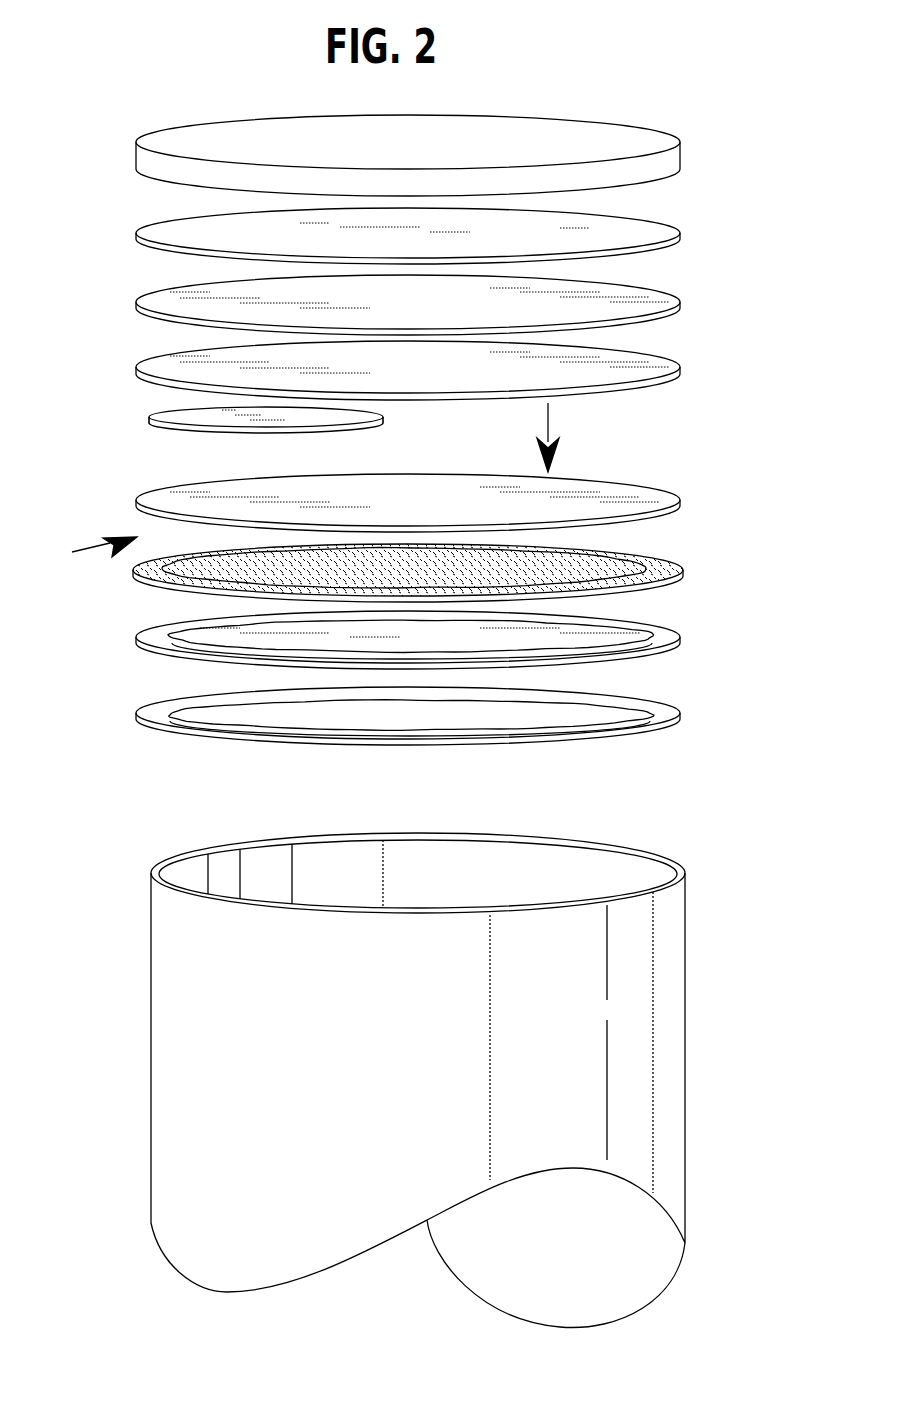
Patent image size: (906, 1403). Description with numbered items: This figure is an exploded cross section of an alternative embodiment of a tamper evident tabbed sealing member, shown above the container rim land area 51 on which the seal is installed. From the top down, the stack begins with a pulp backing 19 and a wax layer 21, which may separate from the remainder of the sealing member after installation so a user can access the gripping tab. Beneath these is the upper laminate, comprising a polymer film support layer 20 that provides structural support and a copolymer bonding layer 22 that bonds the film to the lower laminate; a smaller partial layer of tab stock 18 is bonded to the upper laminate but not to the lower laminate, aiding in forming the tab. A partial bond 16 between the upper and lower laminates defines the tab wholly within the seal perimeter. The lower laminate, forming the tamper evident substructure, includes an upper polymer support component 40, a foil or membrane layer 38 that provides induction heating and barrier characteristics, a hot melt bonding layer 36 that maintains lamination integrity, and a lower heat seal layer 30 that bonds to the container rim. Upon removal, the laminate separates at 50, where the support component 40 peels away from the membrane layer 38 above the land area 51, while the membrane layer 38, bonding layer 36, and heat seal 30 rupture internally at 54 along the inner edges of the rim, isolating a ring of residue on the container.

The pulp backing 19 is at (673, 166).
The wax layer 21 is at (633, 235).
The polymer film support layer 20 is at (610, 315).
The bonding layer 22 is at (597, 382).
The tab stock 18 is at (177, 422).
The partial bond 16 is at (569, 437).
The upper polymer support component 40 is at (620, 495).
The laminate separation location 50 is at (87, 556).
The membrane layer 38 is at (647, 572).
The bonding layer 36 is at (640, 633).
The heat seal layer 30 is at (633, 727).
The internal rupture 54 is at (290, 727).
The container rim land area 51 is at (212, 913).